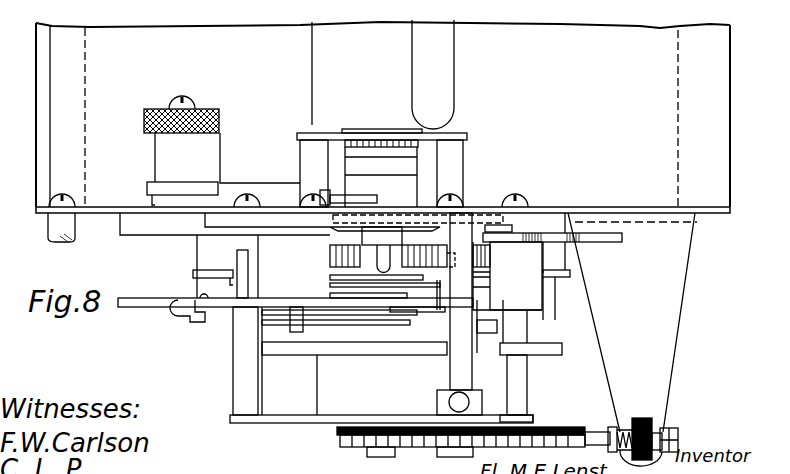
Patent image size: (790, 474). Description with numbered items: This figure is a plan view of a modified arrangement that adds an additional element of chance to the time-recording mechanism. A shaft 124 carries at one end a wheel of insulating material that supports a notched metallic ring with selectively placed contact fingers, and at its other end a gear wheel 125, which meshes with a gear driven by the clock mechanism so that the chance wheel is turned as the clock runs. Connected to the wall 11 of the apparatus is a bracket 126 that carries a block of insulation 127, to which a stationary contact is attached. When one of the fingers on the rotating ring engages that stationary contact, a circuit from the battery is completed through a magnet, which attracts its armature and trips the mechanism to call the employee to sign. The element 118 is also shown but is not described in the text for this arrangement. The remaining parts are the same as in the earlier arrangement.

The wall 11 is at (718, 210).
The gear wheel 125 is at (483, 222).
The bracket 126 is at (687, 305).
The shaft 124 is at (463, 370).
The spring rod 118 is at (600, 430).
The block of insulation 127 is at (650, 422).